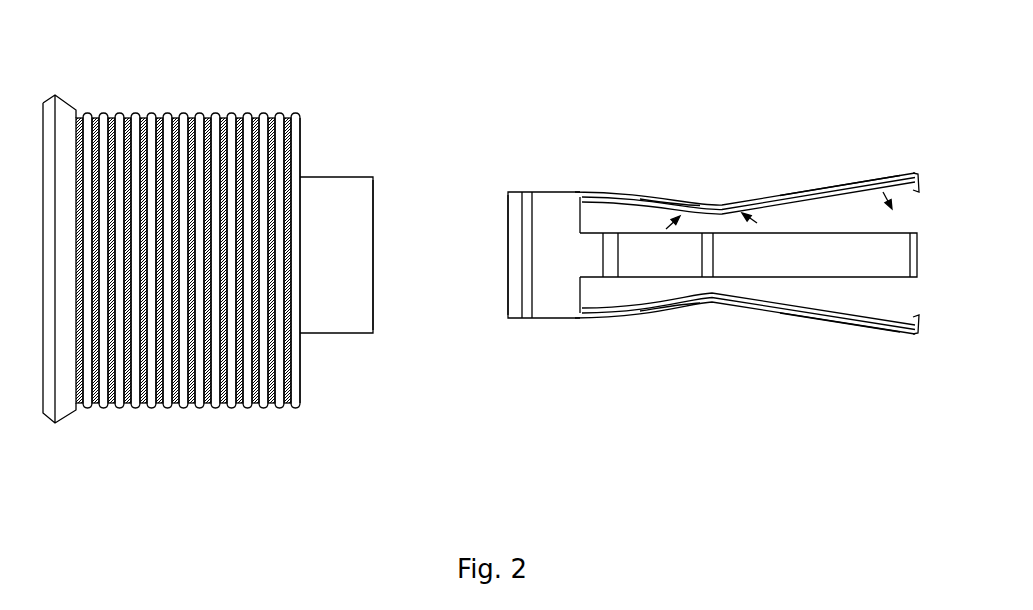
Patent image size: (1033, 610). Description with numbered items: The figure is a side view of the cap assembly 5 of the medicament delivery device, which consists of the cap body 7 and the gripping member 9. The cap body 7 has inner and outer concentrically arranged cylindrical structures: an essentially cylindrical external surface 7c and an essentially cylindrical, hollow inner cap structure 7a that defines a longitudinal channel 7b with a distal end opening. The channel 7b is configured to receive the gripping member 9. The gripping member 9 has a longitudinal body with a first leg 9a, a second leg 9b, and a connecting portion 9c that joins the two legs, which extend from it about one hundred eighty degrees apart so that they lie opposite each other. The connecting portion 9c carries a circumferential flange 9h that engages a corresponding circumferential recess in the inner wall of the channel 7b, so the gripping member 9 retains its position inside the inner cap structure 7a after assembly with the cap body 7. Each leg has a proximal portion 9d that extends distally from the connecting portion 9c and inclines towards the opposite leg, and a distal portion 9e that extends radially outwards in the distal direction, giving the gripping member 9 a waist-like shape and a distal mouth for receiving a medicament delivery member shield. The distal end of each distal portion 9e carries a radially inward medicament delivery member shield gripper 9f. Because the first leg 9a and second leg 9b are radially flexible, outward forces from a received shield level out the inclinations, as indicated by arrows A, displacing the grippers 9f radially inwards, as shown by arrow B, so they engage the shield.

The cap assembly 5 is at (455, 127).
The cap body 7 is at (204, 93).
The inner cap structure 7a is at (340, 177).
The longitudinal channel 7b is at (378, 251).
The external surface 7c is at (258, 145).
The gripping member 9 is at (624, 155).
The first leg 9a is at (752, 192).
The second leg 9b is at (752, 313).
The connecting portion 9c is at (542, 191).
The proximal portion 9d is at (668, 200).
The distal portion 9e is at (843, 187).
The medicament delivery member shield gripper 9f is at (915, 187).
The circumferential flange 9h is at (523, 319).